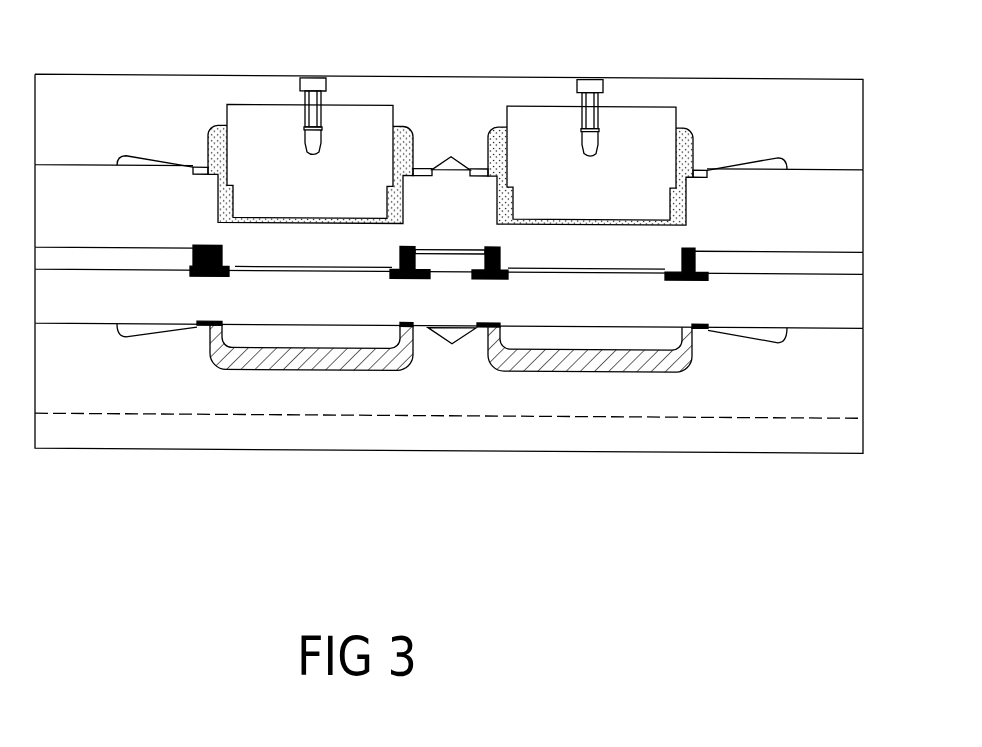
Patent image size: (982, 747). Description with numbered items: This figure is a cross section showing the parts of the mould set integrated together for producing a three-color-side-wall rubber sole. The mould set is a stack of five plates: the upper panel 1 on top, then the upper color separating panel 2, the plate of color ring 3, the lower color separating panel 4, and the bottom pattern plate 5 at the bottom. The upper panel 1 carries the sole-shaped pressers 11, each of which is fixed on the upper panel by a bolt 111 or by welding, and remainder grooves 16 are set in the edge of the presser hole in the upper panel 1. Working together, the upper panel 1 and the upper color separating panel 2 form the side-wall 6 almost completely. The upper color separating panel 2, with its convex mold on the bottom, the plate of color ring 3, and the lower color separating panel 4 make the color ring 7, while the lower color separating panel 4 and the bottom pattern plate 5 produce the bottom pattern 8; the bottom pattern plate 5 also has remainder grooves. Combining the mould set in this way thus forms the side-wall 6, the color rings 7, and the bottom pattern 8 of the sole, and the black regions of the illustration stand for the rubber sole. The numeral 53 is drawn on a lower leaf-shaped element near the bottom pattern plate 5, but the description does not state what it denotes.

The upper panel 1 is at (747, 101).
The upper color separating panel 2 is at (850, 214).
The plate of color ring 3 is at (852, 264).
The lower color separating panel 4 is at (852, 300).
The bottom pattern plate 5 is at (857, 350).
The side-wall 6 is at (494, 127).
The color ring 7 is at (485, 275).
The pattern 8 is at (627, 363).
The sole-shaped presser 11 is at (628, 133).
The remainder groove 16 is at (135, 155).
The lower leaf spring 53 is at (135, 329).
The bolt 111 is at (318, 80).